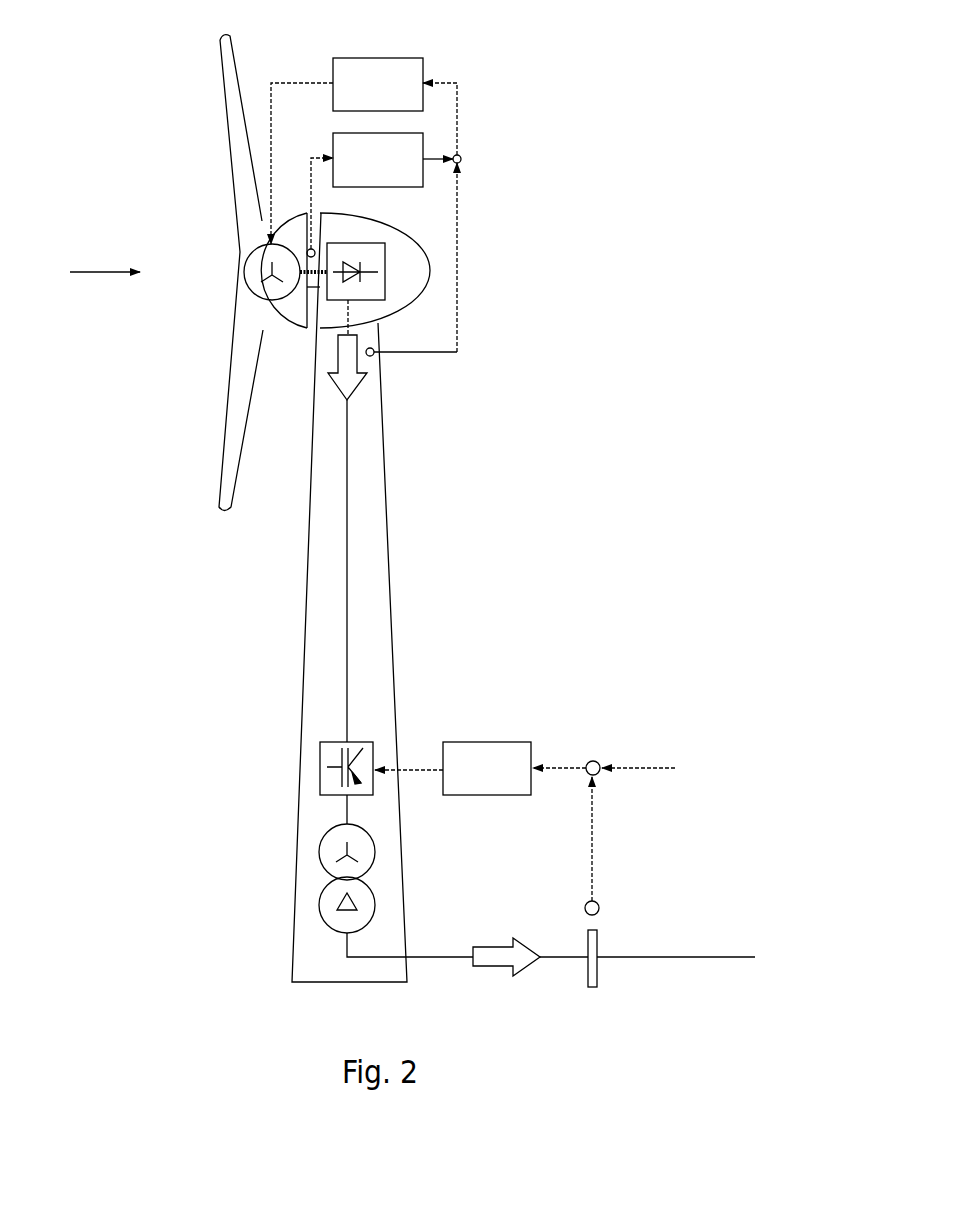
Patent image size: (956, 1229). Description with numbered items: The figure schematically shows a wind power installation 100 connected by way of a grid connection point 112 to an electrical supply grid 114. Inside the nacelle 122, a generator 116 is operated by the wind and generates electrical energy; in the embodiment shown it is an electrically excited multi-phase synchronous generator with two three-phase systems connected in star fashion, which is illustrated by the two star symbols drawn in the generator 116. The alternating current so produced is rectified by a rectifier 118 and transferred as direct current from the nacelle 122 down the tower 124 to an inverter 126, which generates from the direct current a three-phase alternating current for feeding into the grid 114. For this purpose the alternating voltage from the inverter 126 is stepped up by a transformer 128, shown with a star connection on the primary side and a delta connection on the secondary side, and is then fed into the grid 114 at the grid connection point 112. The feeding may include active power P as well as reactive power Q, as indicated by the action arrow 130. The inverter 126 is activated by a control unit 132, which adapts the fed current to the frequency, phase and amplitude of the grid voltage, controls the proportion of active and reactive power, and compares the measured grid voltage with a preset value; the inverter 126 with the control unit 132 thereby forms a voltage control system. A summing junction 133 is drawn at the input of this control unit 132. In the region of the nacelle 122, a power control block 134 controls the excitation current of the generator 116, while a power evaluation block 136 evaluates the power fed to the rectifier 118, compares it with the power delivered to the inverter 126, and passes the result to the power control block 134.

The wind power installation 100 is at (397, 552).
The grid connection point 112 is at (592, 988).
The electrical supply grid 114 is at (677, 958).
The generator 116 is at (237, 268).
The rectifier 118 is at (385, 265).
The nacelle 122 is at (296, 328).
The tower 124 is at (312, 550).
The inverter 126 is at (320, 750).
The transformer 128 is at (318, 903).
The action arrow 130 is at (348, 533).
The control unit 132 is at (493, 741).
The summation junction 133 is at (593, 761).
The power control block 134 is at (423, 65).
The power evaluation block 136 is at (333, 147).